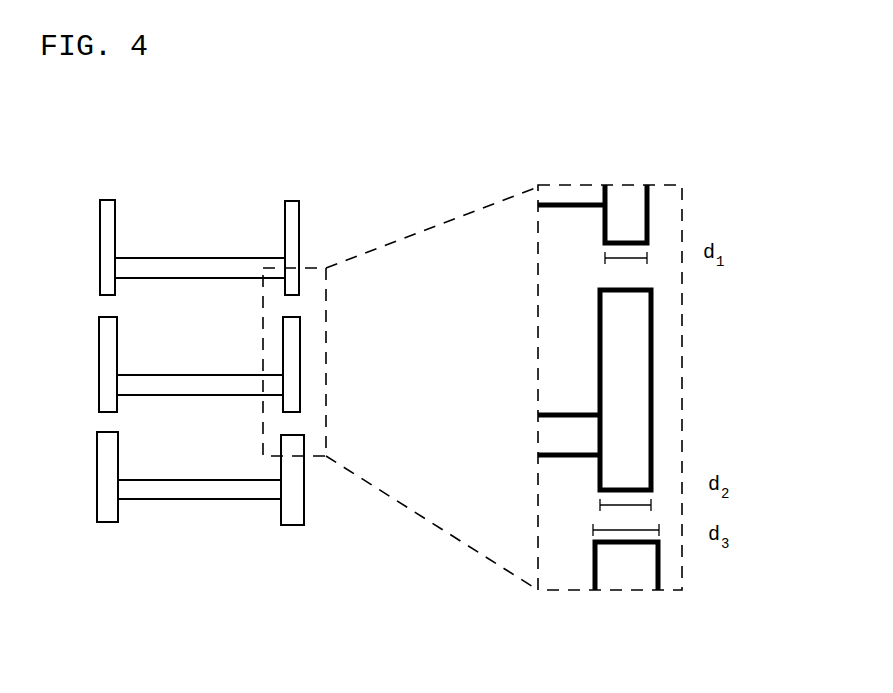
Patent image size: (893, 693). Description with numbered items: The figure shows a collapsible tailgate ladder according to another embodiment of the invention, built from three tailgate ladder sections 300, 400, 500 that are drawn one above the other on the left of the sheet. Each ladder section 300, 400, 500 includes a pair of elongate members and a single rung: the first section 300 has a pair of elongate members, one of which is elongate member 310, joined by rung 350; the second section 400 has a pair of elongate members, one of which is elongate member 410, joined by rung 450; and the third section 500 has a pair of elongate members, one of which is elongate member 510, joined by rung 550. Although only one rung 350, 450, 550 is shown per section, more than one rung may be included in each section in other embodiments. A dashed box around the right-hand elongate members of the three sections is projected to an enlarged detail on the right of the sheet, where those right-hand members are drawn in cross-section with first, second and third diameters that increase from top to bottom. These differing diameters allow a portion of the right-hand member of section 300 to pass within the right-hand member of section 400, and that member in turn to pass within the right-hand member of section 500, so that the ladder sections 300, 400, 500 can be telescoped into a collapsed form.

The tailgate ladder section 300 is at (204, 235).
The elongate member 310 is at (115, 215).
The rung 350 is at (198, 268).
The tailgate ladder section 400 is at (204, 363).
The elongate member 410 is at (117, 345).
The rung 450 is at (200, 386).
The tailgate ladder section 500 is at (204, 493).
The elongate member 510 is at (118, 450).
The rung 550 is at (228, 488).